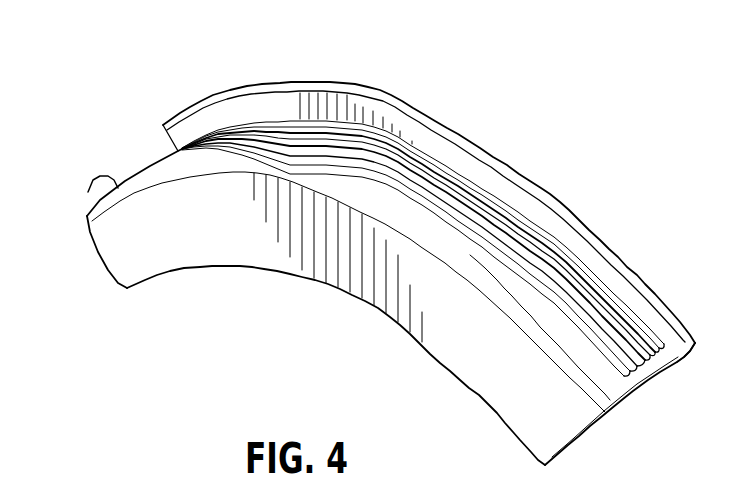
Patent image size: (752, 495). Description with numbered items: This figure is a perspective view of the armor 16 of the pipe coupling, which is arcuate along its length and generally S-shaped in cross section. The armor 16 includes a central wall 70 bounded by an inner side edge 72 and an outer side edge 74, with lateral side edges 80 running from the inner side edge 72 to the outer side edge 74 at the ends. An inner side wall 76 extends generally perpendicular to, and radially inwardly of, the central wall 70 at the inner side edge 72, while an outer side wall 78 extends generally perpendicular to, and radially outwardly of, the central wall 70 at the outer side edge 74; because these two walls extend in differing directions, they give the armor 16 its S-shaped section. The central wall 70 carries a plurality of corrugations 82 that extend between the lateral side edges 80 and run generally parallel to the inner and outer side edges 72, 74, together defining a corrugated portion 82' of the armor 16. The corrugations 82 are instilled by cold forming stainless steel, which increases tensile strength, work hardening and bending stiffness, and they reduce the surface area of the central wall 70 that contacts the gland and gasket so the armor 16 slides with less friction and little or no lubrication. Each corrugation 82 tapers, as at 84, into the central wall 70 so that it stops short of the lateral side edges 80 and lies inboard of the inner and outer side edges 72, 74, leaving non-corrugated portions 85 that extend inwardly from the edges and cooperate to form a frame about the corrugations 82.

The armor 16 is at (423, 205).
The central wall 70 is at (375, 246).
The inner side edge 72 is at (639, 269).
The outer side edge 74 is at (411, 365).
The inner side wall 76 is at (424, 207).
The outer side wall 78 is at (346, 292).
The lateral side edges 80 is at (324, 335).
The corrugations 82 is at (416, 211).
The corrugated portion 82' is at (420, 185).
The taper 84 is at (653, 412).
The non-corrugated portions 85 is at (579, 353).